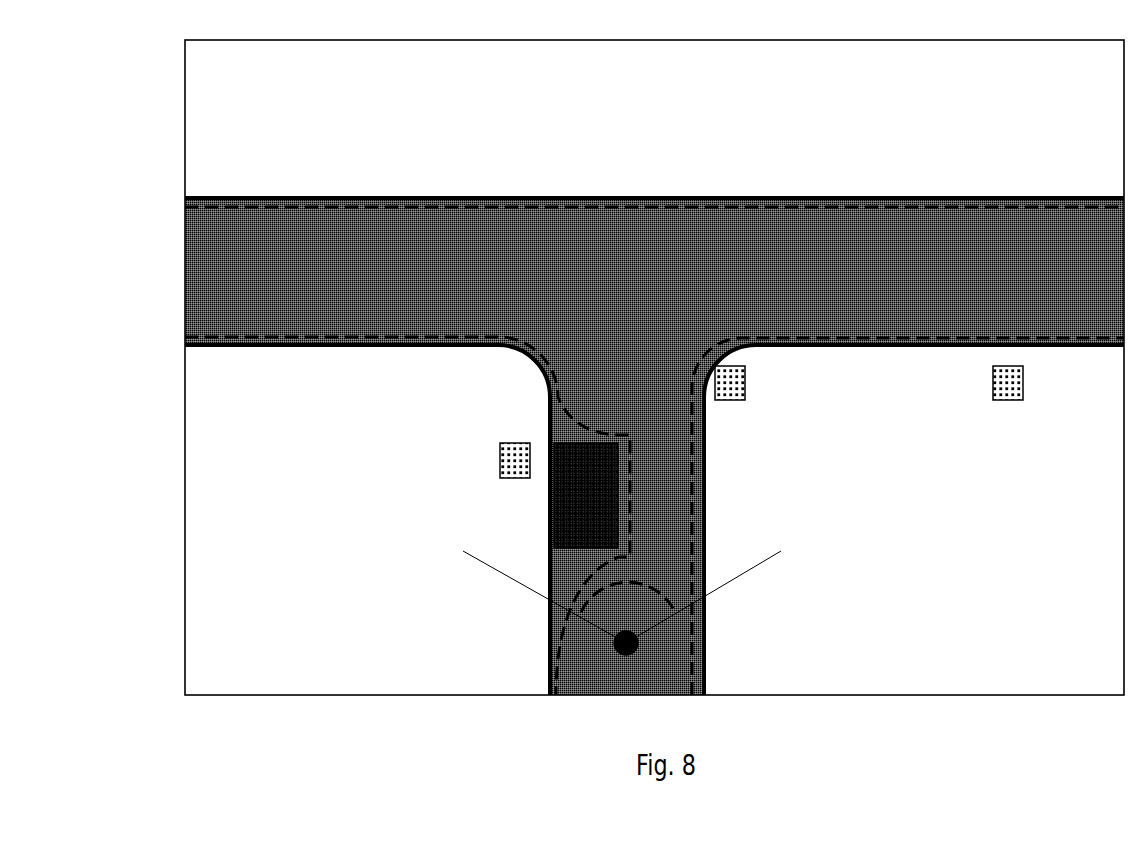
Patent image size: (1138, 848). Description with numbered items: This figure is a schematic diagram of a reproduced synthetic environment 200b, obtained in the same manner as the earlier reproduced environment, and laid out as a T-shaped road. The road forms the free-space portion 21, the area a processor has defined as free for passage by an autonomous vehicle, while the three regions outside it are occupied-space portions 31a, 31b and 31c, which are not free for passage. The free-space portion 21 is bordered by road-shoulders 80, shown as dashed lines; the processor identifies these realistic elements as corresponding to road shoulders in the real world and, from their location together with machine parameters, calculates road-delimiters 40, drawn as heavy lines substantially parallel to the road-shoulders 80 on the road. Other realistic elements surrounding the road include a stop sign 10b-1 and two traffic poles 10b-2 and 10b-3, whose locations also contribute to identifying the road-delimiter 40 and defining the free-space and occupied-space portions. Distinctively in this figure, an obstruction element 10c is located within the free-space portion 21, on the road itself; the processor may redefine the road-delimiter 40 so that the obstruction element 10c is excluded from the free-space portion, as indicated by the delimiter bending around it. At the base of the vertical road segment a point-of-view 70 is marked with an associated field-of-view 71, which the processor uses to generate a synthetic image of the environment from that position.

The reproduced synthetic environment 200b is at (175, 54).
The free-space portion 21 is at (485, 282).
The occupied-space portion 31a is at (915, 592).
The occupied-space portion 31b is at (435, 592).
The occupied-space portion 31c is at (532, 158).
The road-delimiter 40 is at (387, 199).
The road-shoulders 80 is at (833, 190).
The obstruction element 10c is at (586, 495).
The stop sign 10b-1 is at (490, 452).
The traffic pole 10b-2 is at (738, 375).
The traffic pole 10b-3 is at (1016, 375).
The point-of-view 70 is at (612, 642).
The field-of-view 71 is at (633, 573).